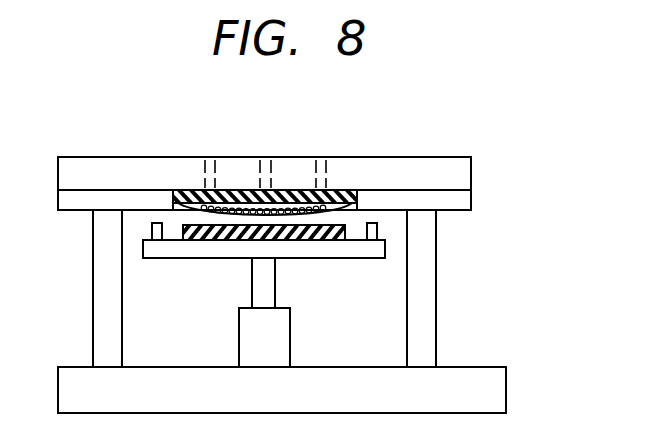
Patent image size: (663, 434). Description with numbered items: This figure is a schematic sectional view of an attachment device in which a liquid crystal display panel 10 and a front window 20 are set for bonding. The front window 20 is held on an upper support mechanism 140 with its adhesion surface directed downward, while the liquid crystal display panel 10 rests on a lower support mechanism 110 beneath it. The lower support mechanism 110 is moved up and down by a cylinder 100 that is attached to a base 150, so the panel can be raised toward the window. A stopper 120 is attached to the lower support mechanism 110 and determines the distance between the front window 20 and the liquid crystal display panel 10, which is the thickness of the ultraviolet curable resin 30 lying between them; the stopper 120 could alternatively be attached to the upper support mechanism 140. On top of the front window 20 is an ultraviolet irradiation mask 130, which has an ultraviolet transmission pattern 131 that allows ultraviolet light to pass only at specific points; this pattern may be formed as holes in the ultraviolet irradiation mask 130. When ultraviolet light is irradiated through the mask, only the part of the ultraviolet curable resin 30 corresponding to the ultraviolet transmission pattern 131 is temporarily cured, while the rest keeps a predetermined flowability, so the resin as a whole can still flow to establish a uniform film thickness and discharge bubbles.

The liquid crystal display panel 10 is at (187, 240).
The front window 20 is at (193, 196).
The ultraviolet curable resin 30 is at (231, 204).
The cylinder 100 is at (277, 335).
The lower support mechanism 110 is at (348, 248).
The stopper 120 is at (377, 235).
The ultraviolet irradiation mask 130 is at (90, 177).
The ultraviolet transmission pattern 131 is at (320, 157).
The upper support mechanism 140 is at (460, 200).
The base 150 is at (467, 375).